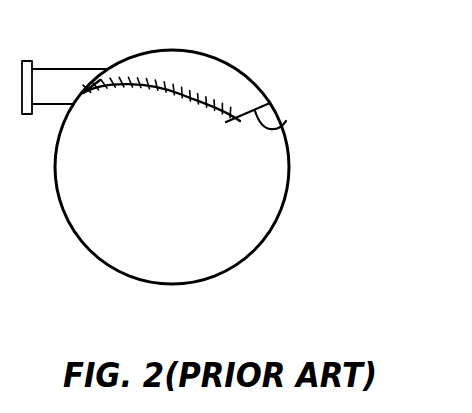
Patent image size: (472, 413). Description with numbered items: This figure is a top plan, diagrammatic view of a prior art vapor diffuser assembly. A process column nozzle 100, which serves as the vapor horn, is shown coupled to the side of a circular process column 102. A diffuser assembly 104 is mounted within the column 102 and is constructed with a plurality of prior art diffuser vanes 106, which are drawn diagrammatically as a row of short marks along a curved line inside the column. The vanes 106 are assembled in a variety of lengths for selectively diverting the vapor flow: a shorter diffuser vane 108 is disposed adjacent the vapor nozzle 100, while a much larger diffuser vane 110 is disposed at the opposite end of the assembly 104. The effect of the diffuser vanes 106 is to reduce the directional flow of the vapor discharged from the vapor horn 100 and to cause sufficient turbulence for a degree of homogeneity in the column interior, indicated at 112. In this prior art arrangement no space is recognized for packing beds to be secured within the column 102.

The process column nozzle 100 is at (51, 105).
The process column 102 is at (113, 269).
The diffuser assembly 104 is at (286, 121).
The diffuser vanes 106 is at (165, 86).
The shorter diffuser vane 108 is at (111, 71).
The larger diffuser vane 110 is at (244, 110).
The ball surface 112 is at (225, 215).